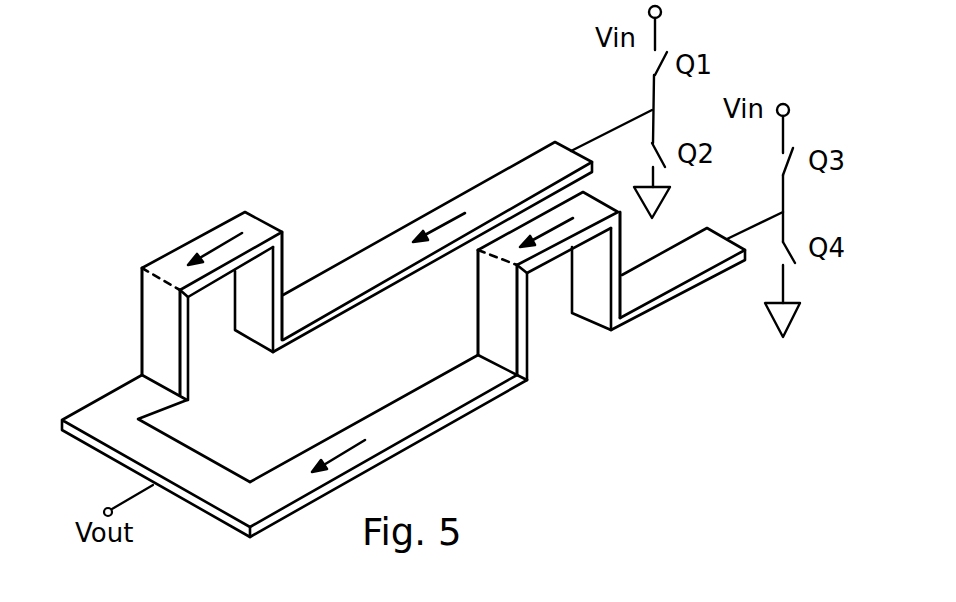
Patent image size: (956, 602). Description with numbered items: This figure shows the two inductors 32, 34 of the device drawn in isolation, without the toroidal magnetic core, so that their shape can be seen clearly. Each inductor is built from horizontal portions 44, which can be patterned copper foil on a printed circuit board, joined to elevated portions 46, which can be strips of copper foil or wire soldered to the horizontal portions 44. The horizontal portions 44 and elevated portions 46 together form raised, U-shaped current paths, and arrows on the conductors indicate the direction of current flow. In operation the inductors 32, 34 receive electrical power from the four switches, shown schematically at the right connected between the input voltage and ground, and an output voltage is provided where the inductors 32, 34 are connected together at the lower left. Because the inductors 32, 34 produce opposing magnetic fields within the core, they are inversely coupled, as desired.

The inductor 32 is at (655, 395).
The inductor 34 is at (144, 212).
The horizontal portions 44 is at (115, 408).
The elevated portions 46 is at (237, 227).